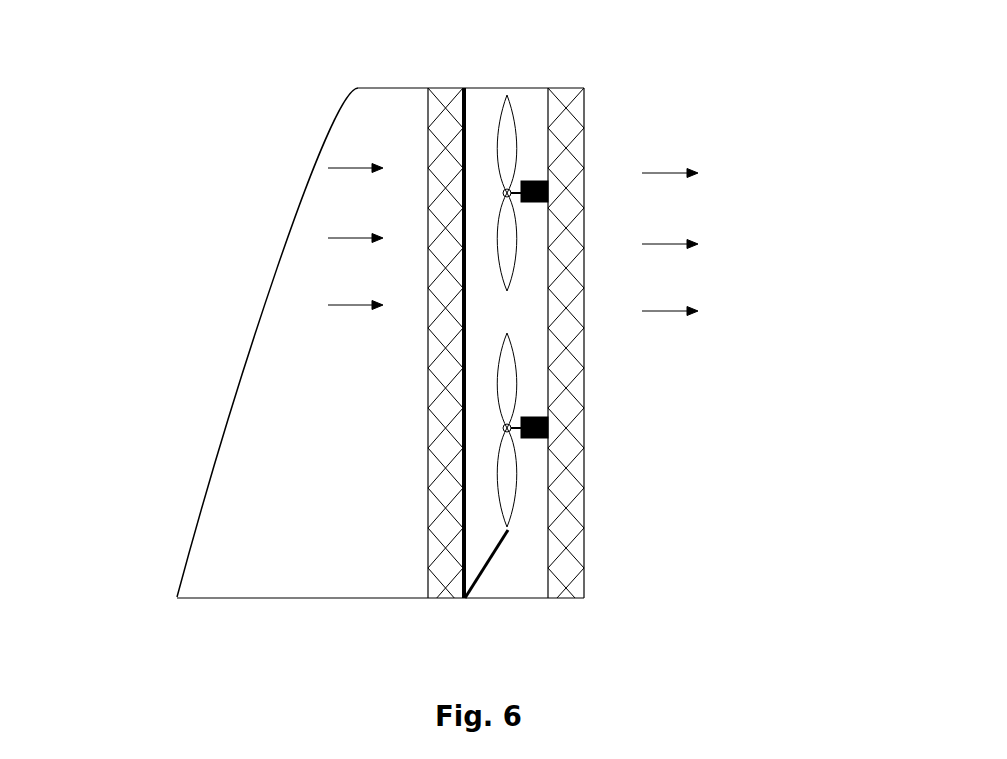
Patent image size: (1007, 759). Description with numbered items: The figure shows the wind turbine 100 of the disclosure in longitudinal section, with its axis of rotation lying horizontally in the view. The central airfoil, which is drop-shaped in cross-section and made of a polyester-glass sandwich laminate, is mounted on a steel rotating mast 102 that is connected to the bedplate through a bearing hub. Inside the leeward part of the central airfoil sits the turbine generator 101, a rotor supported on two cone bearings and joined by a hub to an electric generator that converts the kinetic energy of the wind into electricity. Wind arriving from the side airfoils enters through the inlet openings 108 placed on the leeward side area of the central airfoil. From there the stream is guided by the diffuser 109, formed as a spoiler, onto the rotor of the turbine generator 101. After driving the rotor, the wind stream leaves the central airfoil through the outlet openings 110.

The air treatment device 100 is at (156, 115).
The turbine generator 101 is at (536, 198).
The rotating mast 102 is at (450, 392).
The inlet openings 108 is at (437, 565).
The diffuser 109 is at (508, 530).
The outlet openings 110 is at (583, 88).